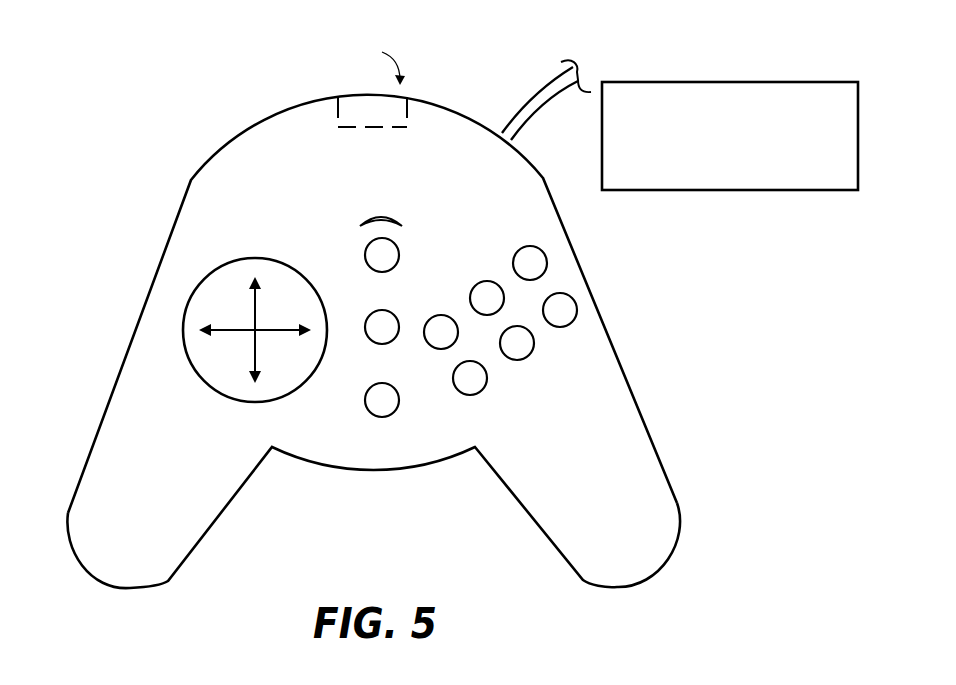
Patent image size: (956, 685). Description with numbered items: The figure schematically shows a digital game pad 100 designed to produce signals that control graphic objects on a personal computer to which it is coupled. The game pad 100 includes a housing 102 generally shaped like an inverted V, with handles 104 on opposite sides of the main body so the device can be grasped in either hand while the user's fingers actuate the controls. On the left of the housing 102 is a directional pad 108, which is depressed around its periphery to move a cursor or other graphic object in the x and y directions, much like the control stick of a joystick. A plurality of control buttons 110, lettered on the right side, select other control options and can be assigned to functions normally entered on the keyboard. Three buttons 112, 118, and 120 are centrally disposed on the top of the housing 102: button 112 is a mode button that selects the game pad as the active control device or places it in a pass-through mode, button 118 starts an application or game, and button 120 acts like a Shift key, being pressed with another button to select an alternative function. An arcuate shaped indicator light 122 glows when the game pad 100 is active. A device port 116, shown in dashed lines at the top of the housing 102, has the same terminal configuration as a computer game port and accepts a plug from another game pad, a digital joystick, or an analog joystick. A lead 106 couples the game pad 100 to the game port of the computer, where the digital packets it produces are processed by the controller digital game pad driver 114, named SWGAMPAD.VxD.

The digital game pad 100 is at (145, 640).
The housing 102 is at (566, 236).
The handles 104 is at (223, 512).
The lead 106 is at (522, 103).
The directional pad 108 is at (187, 367).
The control buttons 110 is at (582, 380).
The mode button 112 is at (399, 256).
The controller digital game pad driver 114 is at (734, 82).
The device port 116 is at (408, 97).
The button 118 is at (388, 344).
The button 120 is at (397, 412).
The arcuate shaped indicator light 122 is at (403, 226).